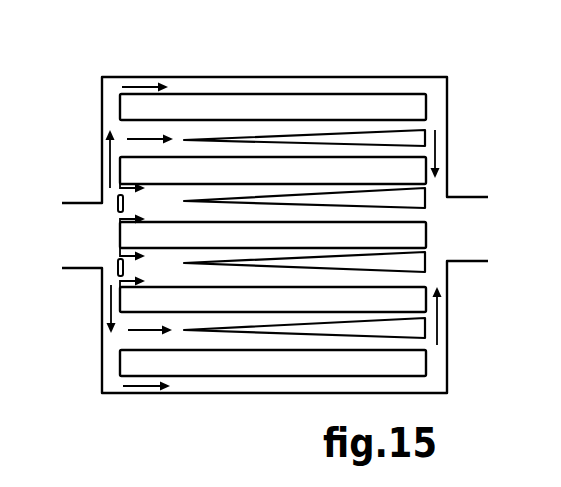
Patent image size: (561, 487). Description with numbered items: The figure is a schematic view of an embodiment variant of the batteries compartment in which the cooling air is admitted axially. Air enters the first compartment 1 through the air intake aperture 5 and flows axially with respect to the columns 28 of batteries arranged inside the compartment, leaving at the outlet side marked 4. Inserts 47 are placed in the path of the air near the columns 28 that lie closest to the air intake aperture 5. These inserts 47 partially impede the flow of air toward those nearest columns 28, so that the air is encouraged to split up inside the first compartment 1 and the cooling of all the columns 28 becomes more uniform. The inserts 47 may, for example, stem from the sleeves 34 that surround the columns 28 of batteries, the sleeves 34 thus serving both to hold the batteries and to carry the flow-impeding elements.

The first compartment 1 is at (408, 60).
The columns 28 is at (276, 85).
The sleeves 34 is at (432, 187).
The inserts 47 is at (116, 202).
The air intake aperture 5 is at (94, 235).
The outlet flow 4 is at (445, 228).